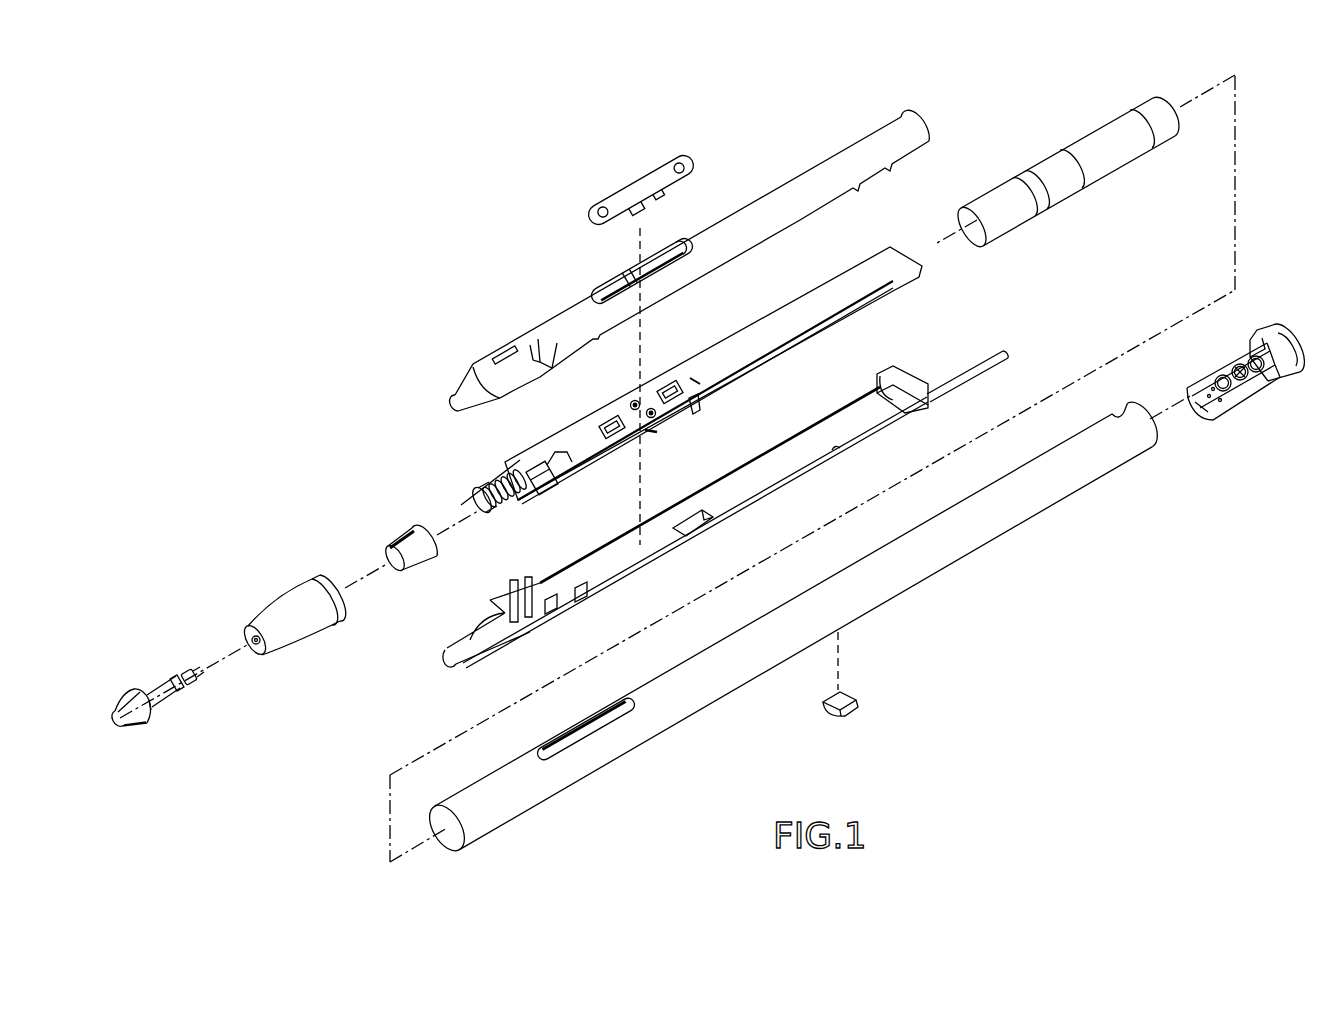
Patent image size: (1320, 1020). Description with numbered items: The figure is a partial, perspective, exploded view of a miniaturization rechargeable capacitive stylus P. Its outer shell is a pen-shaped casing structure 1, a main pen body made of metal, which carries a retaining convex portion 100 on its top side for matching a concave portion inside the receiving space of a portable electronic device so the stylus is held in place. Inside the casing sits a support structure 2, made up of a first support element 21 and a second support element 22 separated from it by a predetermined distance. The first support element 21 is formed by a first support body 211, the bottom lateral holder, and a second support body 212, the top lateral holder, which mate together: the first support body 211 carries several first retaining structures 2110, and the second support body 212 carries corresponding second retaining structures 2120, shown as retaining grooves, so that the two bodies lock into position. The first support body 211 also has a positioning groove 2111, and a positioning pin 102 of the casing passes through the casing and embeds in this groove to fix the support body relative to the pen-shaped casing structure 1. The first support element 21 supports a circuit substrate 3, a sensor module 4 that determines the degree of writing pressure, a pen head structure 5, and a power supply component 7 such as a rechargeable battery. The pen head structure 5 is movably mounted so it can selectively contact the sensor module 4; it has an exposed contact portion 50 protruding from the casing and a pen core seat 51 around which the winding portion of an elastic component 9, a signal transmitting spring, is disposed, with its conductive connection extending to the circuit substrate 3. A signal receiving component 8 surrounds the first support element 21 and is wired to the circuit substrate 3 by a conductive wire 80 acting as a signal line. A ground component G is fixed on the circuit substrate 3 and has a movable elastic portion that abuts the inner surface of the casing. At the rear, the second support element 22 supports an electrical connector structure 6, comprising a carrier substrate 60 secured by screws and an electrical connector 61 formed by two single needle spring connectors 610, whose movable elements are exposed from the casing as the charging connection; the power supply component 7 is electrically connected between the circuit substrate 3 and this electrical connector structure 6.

The miniaturization rechargeable capacitive stylus P is at (153, 108).
The pen-shaped casing structure 1 is at (934, 581).
The positioning pin 102 is at (820, 714).
The support structure 2 is at (793, 97).
The first support element 21 is at (817, 131).
The first support body 211 is at (846, 418).
The second support body 212 is at (737, 225).
The first retaining structures 2110 is at (527, 580).
The positioning groove 2111 is at (700, 515).
The second retaining structures 2120 is at (560, 350).
The second support element 22 is at (1208, 385).
The circuit substrate 3 is at (757, 326).
The sensor module 4 is at (543, 500).
The pen head structure 5 is at (133, 690).
The exposed contact portion 50 is at (134, 712).
The pen core seat 51 is at (478, 495).
The electrical connector structure 6 is at (1290, 506).
The carrier substrate 60 is at (1208, 400).
The electrical connector 61 is at (1312, 470).
The single needle spring connectors 610 is at (1290, 440).
The power supply component 7 is at (1068, 140).
The signal receiving component 8 is at (388, 532).
The conductive wire 80 is at (462, 500).
The elastic component 9 is at (520, 512).
The ground component G is at (701, 407).
The retaining convex portion 100 is at (1273, 335).